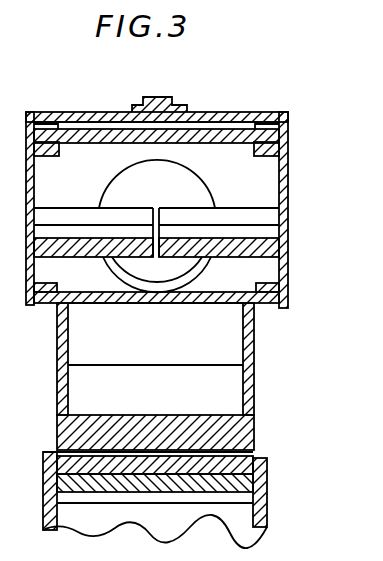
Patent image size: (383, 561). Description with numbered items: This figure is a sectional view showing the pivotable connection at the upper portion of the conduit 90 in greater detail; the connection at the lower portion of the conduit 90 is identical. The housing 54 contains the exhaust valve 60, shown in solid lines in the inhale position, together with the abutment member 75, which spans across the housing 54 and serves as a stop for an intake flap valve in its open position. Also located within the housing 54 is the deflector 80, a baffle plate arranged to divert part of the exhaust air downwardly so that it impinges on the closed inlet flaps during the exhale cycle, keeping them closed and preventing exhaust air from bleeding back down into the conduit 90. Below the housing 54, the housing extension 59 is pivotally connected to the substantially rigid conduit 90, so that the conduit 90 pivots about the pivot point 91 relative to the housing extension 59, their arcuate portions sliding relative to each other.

The housing 54 is at (288, 197).
The housing extension 59 is at (246, 366).
The exhaust valve 60 is at (238, 137).
The abutment member 75 is at (272, 262).
The deflector 80 is at (270, 223).
The conduit 90 is at (268, 498).
The pivot point 91 is at (254, 457).